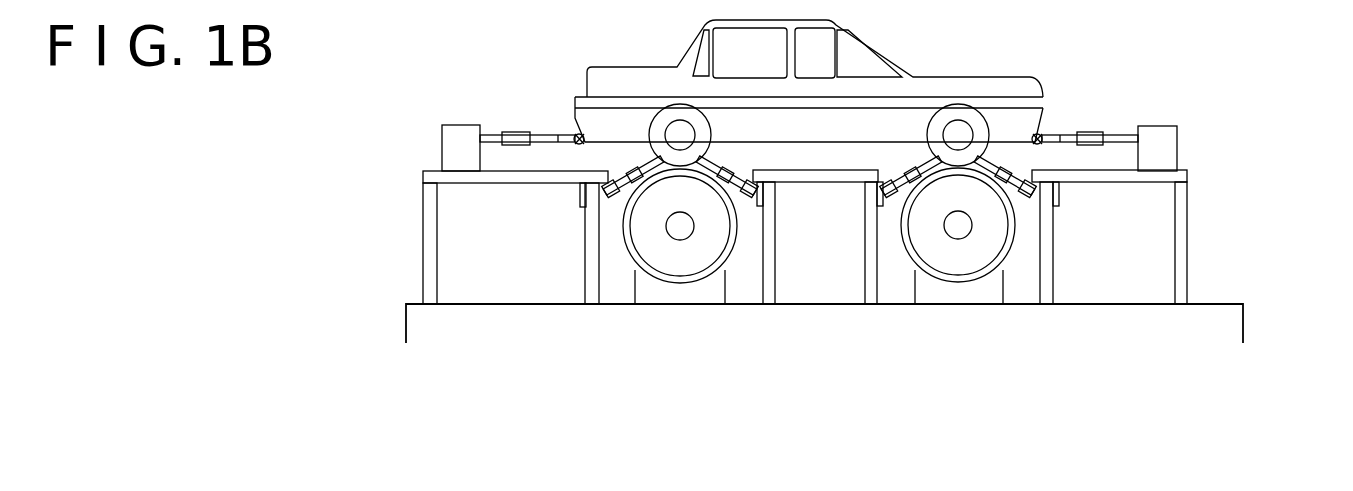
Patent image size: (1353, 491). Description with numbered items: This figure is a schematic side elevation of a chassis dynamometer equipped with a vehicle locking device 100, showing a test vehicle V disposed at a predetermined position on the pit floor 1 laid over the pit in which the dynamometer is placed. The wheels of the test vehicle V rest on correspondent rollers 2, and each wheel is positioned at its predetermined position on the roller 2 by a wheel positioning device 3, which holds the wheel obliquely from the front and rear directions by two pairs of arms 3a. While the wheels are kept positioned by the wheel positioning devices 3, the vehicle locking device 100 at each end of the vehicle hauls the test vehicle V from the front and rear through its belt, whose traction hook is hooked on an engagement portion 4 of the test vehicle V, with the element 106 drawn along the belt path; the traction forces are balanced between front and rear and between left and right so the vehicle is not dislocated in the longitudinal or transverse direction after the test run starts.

The pit floor 1 is at (1188, 178).
The roller 2 is at (725, 258).
The wheel positioning device 3 is at (618, 192).
The arm 3a is at (614, 172).
The engagement portion 4 is at (587, 138).
The vehicle locking device 100 is at (440, 145).
The load cell 106 is at (518, 130).
The test vehicle V is at (930, 85).